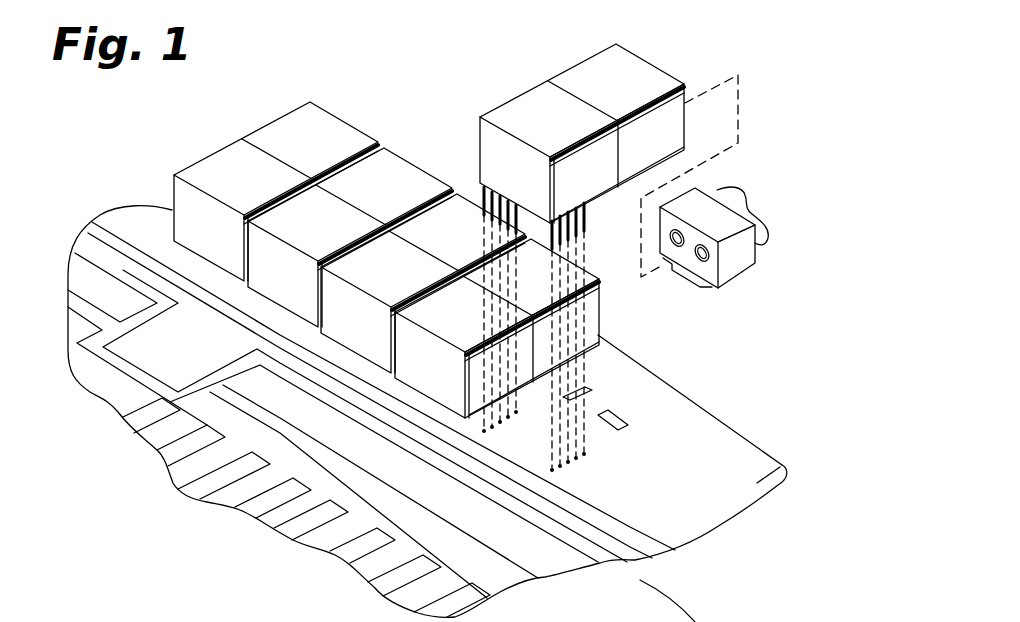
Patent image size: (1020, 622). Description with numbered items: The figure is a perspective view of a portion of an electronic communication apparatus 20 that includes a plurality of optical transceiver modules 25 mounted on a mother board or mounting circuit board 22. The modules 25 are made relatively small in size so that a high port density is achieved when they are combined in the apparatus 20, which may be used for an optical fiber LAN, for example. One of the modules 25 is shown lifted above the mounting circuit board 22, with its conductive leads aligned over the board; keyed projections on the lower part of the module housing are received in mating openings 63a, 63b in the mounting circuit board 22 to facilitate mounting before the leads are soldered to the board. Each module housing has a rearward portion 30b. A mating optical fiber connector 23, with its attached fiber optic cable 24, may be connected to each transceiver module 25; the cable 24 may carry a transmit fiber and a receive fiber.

The electronic communication apparatus 20 is at (163, 138).
The mounting circuit board 22 is at (784, 465).
The mating optical fiber connector 23 is at (738, 265).
The fiber optic cable 24 is at (753, 212).
The optical transceiver module 25 is at (413, 148).
The mating opening 63a is at (593, 383).
The mating opening 63b is at (622, 418).
The rearward portion 30b is at (640, 580).